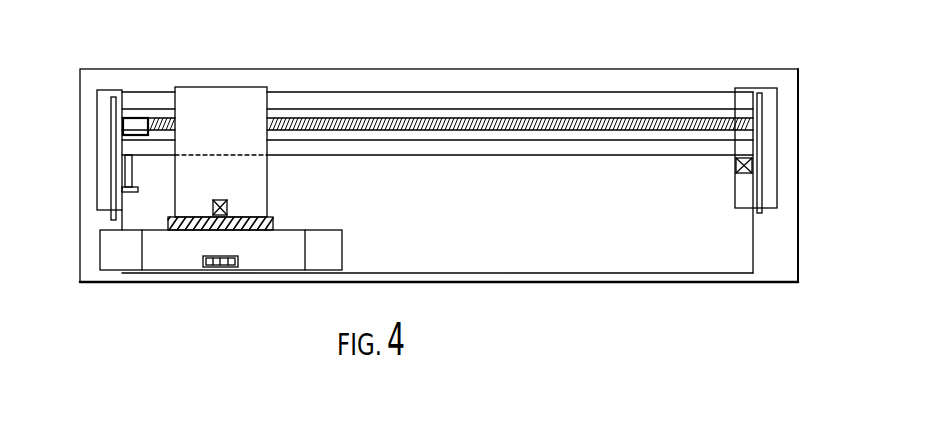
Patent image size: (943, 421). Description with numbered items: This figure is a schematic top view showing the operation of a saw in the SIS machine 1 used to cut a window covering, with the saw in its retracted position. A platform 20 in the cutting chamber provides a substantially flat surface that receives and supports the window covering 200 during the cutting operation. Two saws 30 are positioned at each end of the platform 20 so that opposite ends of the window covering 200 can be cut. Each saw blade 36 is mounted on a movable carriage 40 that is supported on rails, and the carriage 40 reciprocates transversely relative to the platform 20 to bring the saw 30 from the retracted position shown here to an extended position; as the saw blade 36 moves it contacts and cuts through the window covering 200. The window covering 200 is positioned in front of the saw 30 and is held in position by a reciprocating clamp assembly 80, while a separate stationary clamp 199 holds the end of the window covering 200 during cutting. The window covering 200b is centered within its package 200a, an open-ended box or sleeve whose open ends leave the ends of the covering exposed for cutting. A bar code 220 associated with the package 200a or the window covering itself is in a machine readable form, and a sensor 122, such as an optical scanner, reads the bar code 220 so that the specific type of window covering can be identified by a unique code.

The SIS machine 1 is at (806, 137).
The platform 20 is at (652, 225).
The saw 30 is at (100, 81).
The saw blade 36 is at (105, 216).
The movable carriage 40 is at (97, 95).
The reciprocating clamp assembly 80 is at (281, 89).
The sensor 122 is at (246, 188).
The stationary clamp 199 is at (135, 172).
The window covering 200 is at (304, 245).
The package 200a is at (282, 247).
The window covering 200b is at (125, 258).
The bar code 220 is at (226, 268).